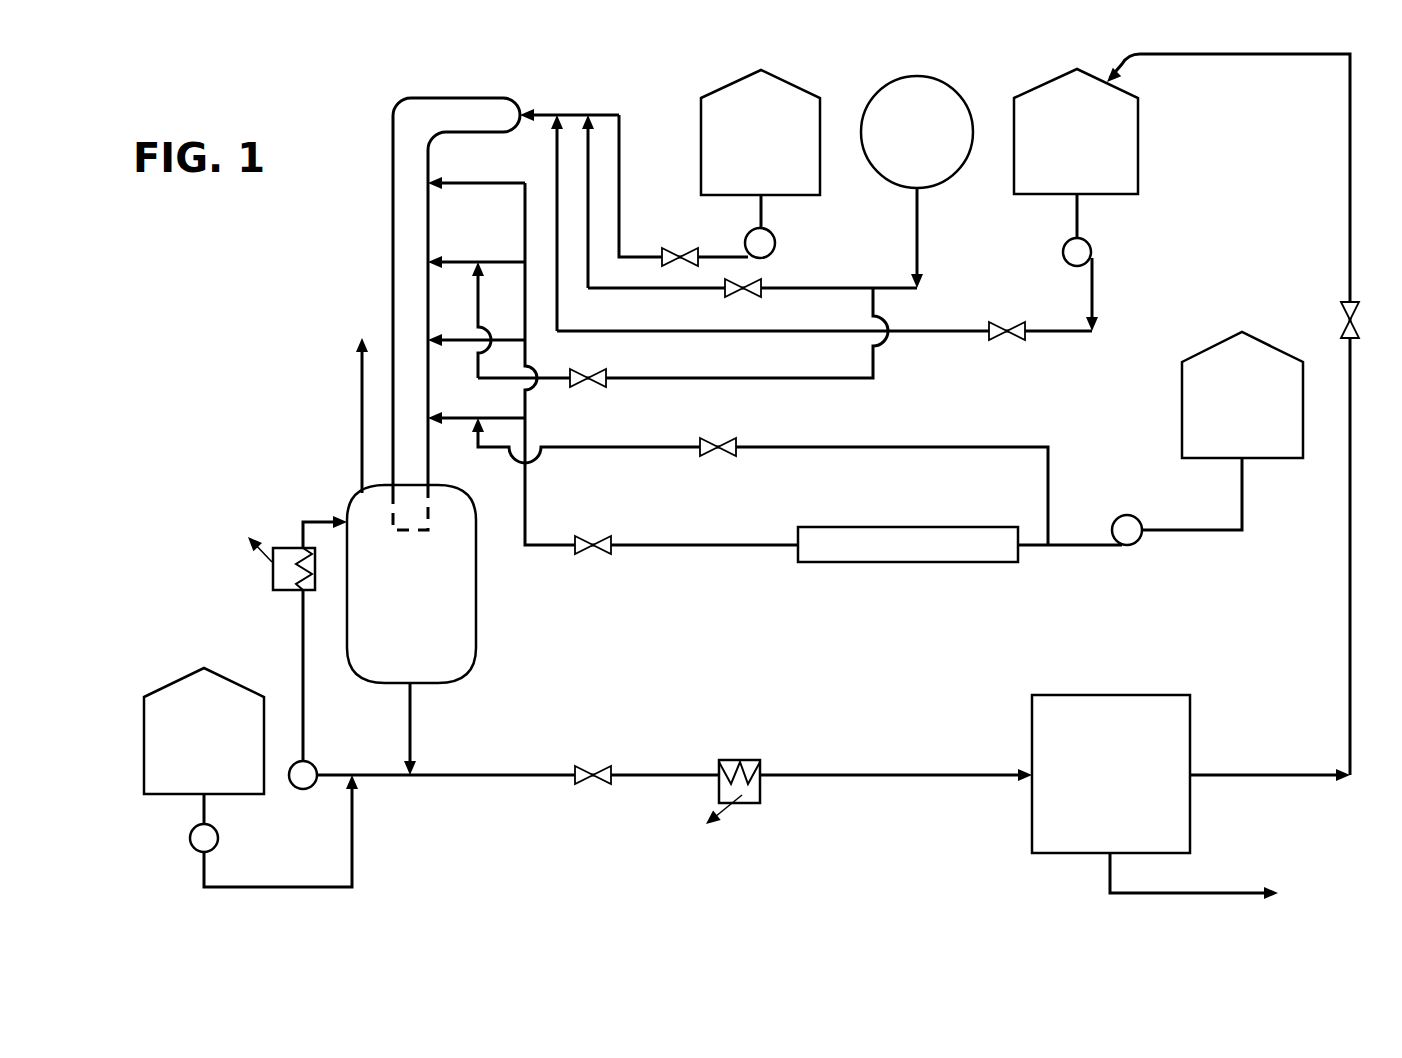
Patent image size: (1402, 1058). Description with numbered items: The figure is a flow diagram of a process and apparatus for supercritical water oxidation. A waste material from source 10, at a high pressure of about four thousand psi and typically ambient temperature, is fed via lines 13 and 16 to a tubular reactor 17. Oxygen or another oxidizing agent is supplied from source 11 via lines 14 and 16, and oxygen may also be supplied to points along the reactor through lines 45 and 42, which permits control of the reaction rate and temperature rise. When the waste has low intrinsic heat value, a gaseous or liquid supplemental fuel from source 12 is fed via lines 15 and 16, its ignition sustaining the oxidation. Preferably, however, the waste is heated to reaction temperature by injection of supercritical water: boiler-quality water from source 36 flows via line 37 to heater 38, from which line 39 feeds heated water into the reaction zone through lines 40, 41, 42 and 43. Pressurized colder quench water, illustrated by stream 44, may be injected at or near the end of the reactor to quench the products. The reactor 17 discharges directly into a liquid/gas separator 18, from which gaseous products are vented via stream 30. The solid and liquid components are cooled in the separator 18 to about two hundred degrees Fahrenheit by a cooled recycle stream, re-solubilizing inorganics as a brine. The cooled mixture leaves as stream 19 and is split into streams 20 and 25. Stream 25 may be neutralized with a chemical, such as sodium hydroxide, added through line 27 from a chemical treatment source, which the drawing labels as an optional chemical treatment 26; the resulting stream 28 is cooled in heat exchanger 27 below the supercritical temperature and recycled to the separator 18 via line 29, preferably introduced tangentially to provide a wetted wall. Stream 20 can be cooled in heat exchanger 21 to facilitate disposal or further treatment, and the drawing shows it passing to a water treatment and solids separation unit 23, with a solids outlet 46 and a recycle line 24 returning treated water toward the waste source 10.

The waste material source 10 is at (1045, 84).
The oxygen source 11 is at (880, 80).
The supplemental fuel source 12 is at (732, 83).
The waste feed line 13 is at (560, 325).
The oxygen feed line 14 is at (592, 282).
The supplemental fuel line 15 is at (622, 226).
The combined feed line 16 is at (577, 112).
The tubular reactor 17 is at (410, 92).
The liquid/gas separator 18 is at (490, 610).
The cooled liquid/solid outlet stream 19 is at (413, 717).
The product stream 20 is at (498, 779).
The heat exchanger 21 is at (772, 806).
The water treatment / solids separation unit 23 is at (1030, 827).
The recycle line 24 is at (1348, 525).
The recycle stream 25 is at (373, 779).
The optional chemical treatment 26 is at (153, 677).
The heat exchanger / chemical addition line 27 is at (256, 576).
The neutralized stream 28 is at (306, 717).
The recycle line 29 is at (313, 520).
The gas vent stream 30 is at (360, 380).
The water source 36 is at (1205, 352).
The water feed line 37 is at (1095, 547).
The heater 38 is at (866, 526).
The heated water line 39 is at (527, 497).
The water injection line 40 is at (470, 417).
The water injection line 41 is at (510, 338).
The water/oxygen injection line 42 is at (505, 262).
The water injection line 43 is at (505, 180).
The quench water stream 44 is at (808, 445).
The oxygen supply line 45 is at (815, 376).
The solids outlet 46 is at (1228, 892).